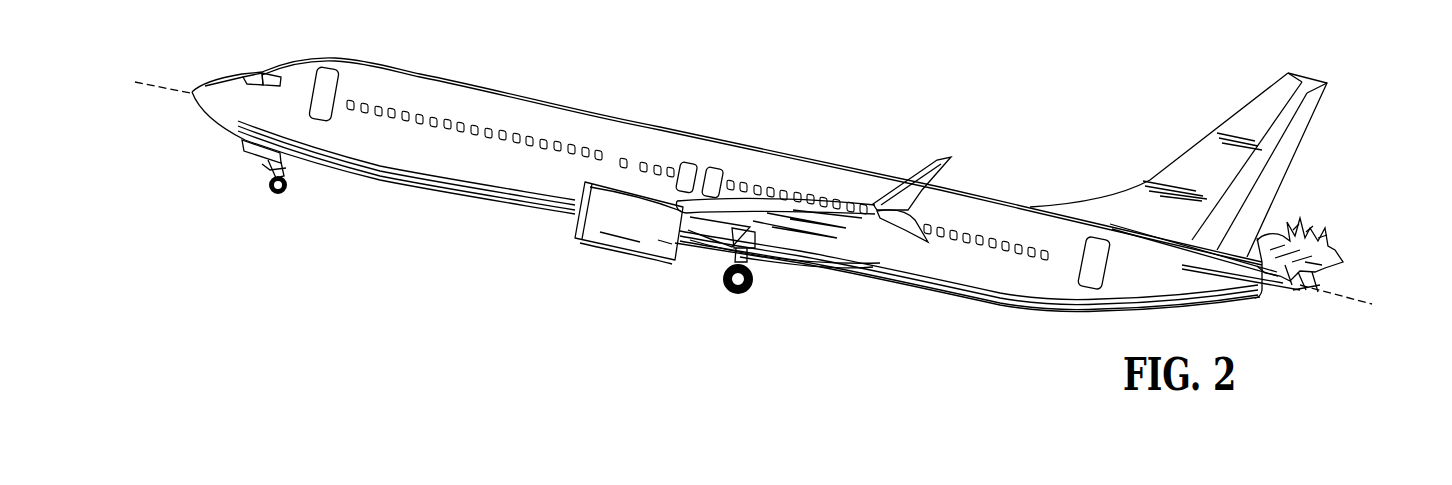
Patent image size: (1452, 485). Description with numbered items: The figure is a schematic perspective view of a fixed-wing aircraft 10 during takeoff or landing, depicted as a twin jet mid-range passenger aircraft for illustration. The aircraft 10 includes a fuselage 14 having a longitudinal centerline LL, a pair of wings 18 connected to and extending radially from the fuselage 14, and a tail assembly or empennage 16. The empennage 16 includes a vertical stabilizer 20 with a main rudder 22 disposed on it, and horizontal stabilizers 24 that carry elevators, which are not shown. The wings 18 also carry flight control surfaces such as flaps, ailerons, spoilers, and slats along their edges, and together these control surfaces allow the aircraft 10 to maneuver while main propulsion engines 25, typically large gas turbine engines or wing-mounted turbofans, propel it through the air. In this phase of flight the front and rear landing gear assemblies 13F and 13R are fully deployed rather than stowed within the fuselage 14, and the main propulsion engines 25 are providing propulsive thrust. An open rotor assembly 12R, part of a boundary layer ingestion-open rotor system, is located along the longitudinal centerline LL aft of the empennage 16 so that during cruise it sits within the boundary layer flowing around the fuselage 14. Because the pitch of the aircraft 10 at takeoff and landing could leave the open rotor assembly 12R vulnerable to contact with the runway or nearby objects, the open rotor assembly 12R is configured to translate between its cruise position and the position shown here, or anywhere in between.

The fixed-wing aircraft 10 is at (941, 61).
The longitudinal centerline LL is at (176, 92).
The fuselage 14 is at (452, 194).
The front landing gear assembly 13F is at (270, 204).
The rear landing gear assembly 13R is at (743, 305).
The main propulsion engine 25 is at (643, 232).
The wing 18 is at (818, 200).
The vertical stabilizer 20 is at (1200, 143).
The main rudder 22 is at (1305, 130).
The empennage 16 is at (1286, 193).
The horizontal stabilizer 24 is at (1260, 297).
The open rotor assembly 12R is at (1338, 245).